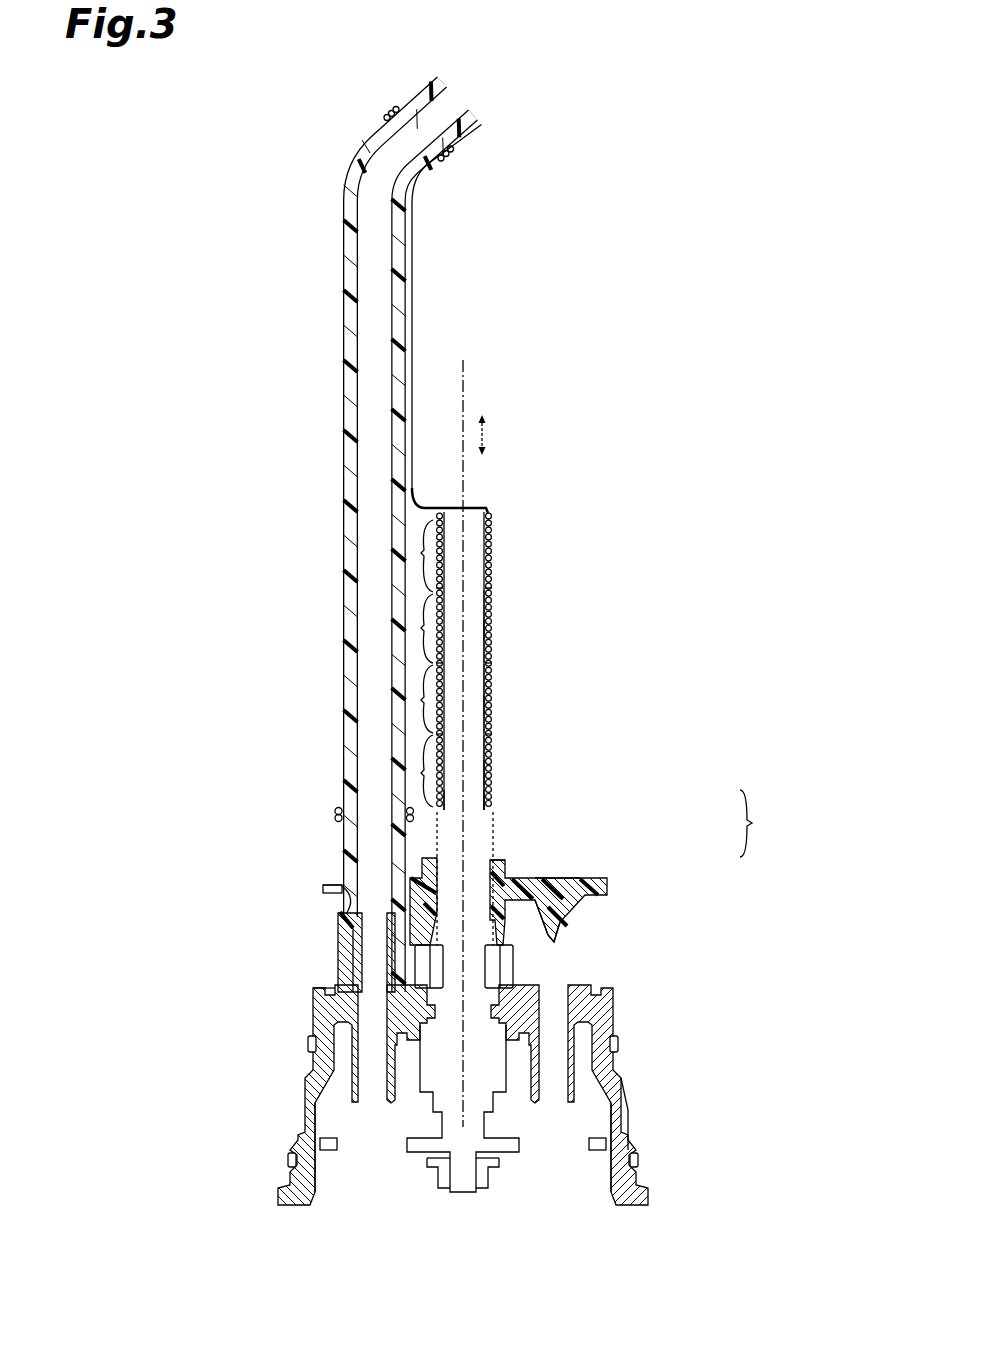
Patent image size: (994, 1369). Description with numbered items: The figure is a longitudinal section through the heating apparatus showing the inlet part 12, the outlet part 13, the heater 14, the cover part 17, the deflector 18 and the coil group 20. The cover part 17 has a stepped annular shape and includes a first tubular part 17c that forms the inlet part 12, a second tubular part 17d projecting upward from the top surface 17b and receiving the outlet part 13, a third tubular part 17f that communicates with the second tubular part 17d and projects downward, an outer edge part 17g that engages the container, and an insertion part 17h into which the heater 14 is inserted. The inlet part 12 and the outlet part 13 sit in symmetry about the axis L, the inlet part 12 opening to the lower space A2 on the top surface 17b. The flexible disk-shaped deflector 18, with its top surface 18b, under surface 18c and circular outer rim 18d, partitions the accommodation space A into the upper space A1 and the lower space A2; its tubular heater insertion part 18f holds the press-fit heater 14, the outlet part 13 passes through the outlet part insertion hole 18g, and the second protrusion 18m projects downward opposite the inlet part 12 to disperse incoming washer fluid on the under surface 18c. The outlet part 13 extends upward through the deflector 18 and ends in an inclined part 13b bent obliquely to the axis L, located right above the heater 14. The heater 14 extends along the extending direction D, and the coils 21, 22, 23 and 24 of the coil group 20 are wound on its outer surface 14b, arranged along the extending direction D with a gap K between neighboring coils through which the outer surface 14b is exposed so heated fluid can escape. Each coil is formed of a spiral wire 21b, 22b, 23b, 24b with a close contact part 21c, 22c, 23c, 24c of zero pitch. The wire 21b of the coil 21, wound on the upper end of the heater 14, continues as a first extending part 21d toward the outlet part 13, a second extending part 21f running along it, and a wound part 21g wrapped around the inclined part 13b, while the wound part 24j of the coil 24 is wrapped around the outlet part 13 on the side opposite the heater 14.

The inlet part 12 is at (575, 982).
The outlet part 13 is at (336, 351).
The inclined part 13b is at (480, 112).
The heater 14 is at (478, 655).
The outer surface 14b is at (485, 685).
The cover part 17 is at (628, 1068).
The top surface 17b is at (333, 985).
The first tubular part 17c is at (575, 1090).
The second tubular part 17d is at (338, 946).
The third tubular part 17f is at (342, 1100).
The outer edge part 17g is at (628, 1143).
The insertion part 17h is at (500, 1025).
The deflector 18 is at (598, 878).
The top surface 18b is at (557, 880).
The under surface 18c is at (323, 893).
The outer rim 18d is at (340, 885).
The heater insertion part 18f is at (500, 866).
The outlet part insertion hole 18g is at (338, 915).
The second protrusion 18m is at (560, 950).
The coil group 20 is at (511, 508).
The coil 21 is at (498, 546).
The wire 21b is at (492, 530).
The close contact part 21c is at (423, 553).
The first extending part 21d is at (437, 512).
The second extending part 21f is at (413, 298).
The wound part 21g is at (455, 160).
The coil 22 is at (498, 625).
The wire 22b is at (492, 636).
The close contact part 22c is at (423, 628).
The coil 23 is at (498, 730).
The wire 23b is at (492, 708).
The close contact part 23c is at (423, 700).
The coil 24 is at (498, 778).
The wire 24b is at (492, 775).
The close contact part 24c is at (423, 773).
The wound part 24j is at (332, 814).
The accommodation space A is at (759, 823).
The upper space A1 is at (523, 818).
The lower space A2 is at (577, 938).
The extending direction D is at (493, 435).
The gap K is at (492, 590).
The axis L is at (466, 396).